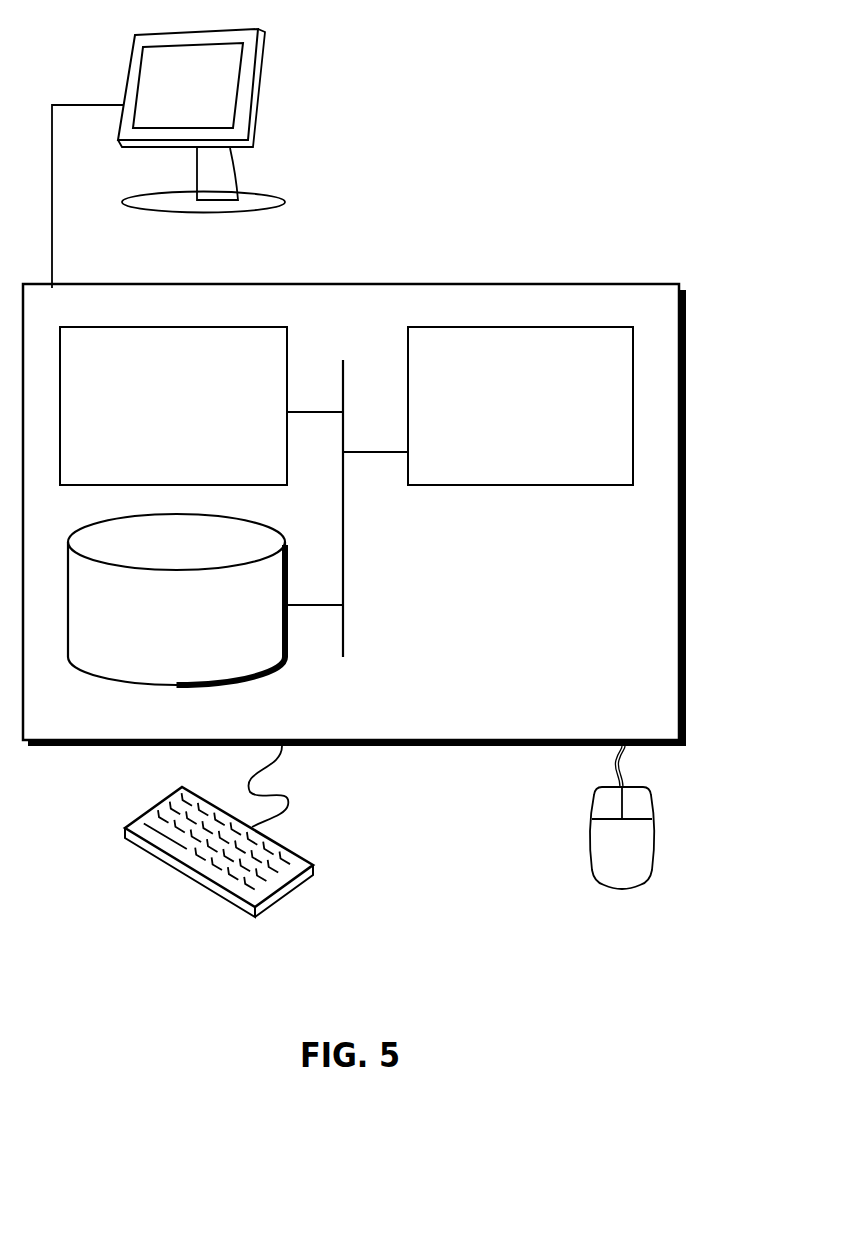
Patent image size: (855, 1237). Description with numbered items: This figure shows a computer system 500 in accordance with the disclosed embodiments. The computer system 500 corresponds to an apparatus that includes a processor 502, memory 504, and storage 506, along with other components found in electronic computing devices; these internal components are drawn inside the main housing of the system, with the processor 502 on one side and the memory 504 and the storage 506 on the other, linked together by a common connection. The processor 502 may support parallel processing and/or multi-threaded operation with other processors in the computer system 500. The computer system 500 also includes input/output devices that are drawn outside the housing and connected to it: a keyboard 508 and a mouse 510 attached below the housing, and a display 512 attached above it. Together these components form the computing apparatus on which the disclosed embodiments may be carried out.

The computer system 500 is at (397, 263).
The processor 502 is at (503, 421).
The memory 504 is at (153, 420).
The storage 506 is at (160, 630).
The keyboard 508 is at (143, 850).
The mouse 510 is at (600, 860).
The display 512 is at (168, 158).